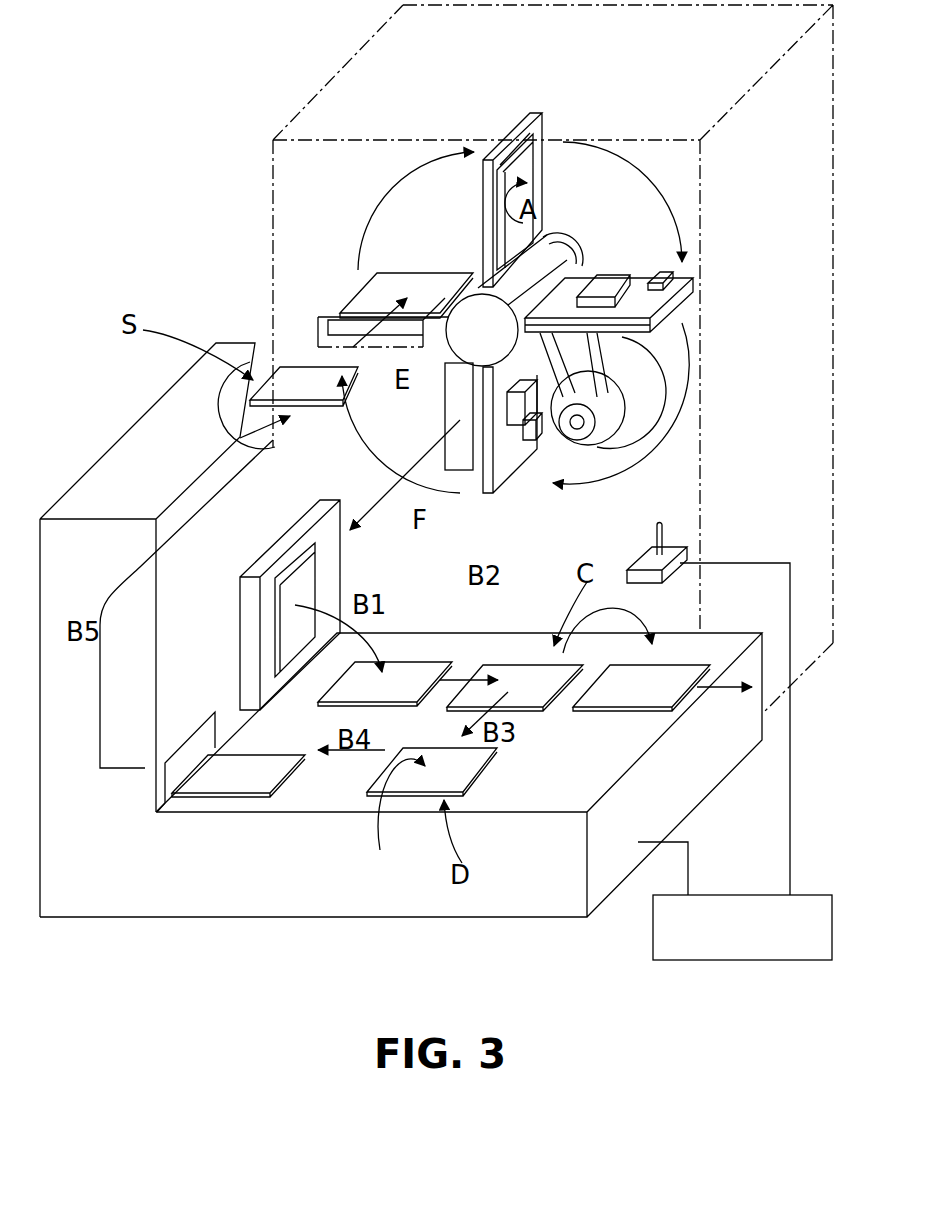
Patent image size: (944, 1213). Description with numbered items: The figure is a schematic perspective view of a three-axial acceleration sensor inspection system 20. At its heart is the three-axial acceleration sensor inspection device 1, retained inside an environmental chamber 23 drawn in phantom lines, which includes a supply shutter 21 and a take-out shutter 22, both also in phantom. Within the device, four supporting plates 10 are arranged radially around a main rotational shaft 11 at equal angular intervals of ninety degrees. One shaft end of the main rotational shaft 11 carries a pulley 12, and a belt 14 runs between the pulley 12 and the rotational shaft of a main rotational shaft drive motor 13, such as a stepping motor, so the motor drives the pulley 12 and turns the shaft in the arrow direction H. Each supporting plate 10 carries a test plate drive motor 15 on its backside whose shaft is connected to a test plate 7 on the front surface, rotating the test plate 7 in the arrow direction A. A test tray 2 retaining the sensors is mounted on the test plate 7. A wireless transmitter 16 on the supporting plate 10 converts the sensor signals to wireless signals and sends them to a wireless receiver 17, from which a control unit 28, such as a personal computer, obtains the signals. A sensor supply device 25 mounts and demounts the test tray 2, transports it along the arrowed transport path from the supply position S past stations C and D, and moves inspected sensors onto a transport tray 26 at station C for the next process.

The three-axial acceleration sensor inspection device 1 is at (634, 156).
The test tray 2 is at (560, 140).
The test plate 7 is at (540, 118).
The supporting plate 10 is at (523, 117).
The main rotational shaft 11 is at (478, 342).
The pulley 12 is at (560, 233).
The main rotational shaft drive motor 13 is at (647, 375).
The belt 14 is at (600, 383).
The test plate drive motor 15 is at (606, 277).
The wireless transmitter 16 is at (663, 267).
The wireless receiver 17 is at (673, 552).
The three-axial acceleration sensor inspection system 20 is at (188, 146).
The supply shutter 21 is at (327, 313).
The take-out shutter 22 is at (466, 470).
The environmental chamber 23 is at (335, 75).
The sensor supply device 25 is at (104, 455).
The transport tray 26 is at (642, 707).
The control unit 28 is at (813, 895).